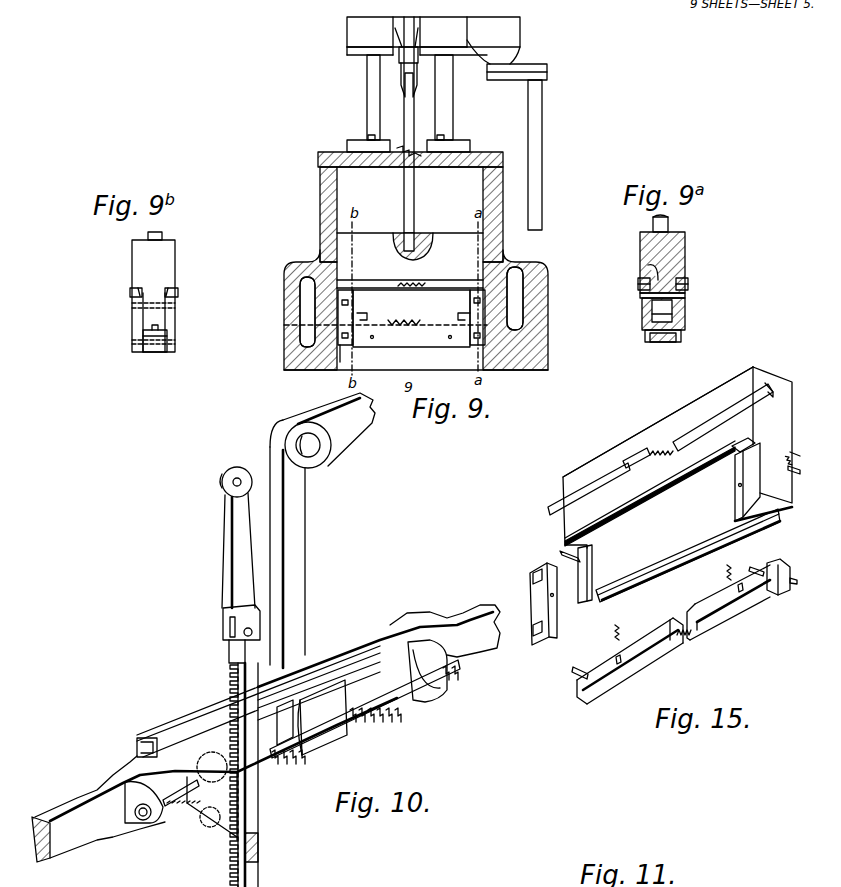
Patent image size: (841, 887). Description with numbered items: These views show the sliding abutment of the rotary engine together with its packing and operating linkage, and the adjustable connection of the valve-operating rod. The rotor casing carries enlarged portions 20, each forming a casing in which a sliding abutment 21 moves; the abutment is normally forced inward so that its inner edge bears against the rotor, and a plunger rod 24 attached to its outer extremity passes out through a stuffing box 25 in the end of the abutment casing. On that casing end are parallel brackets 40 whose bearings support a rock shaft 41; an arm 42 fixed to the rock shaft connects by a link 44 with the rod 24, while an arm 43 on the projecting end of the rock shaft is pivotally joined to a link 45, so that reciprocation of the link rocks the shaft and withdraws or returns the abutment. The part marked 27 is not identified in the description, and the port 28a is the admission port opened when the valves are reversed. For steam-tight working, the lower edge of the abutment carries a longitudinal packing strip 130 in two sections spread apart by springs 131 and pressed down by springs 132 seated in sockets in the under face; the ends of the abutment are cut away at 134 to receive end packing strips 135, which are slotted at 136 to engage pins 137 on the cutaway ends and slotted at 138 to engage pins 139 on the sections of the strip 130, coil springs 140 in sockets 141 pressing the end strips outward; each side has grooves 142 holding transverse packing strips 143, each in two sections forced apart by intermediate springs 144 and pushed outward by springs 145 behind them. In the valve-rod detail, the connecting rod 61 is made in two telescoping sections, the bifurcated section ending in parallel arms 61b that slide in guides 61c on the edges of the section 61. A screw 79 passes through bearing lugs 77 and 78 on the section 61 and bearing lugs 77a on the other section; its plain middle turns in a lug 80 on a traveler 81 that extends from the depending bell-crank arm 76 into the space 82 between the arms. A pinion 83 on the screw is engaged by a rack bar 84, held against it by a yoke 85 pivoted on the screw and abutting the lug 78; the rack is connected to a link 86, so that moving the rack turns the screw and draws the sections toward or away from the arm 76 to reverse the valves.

In FIG. 9, the rock shaft 41 is at (347, 36).
In FIG. 9, the arm 42 is at (400, 56).
In FIG. 9, the arm 43 is at (505, 62).
In FIG. 9, the link 44 is at (402, 78).
In FIG. 9, the link 45 is at (542, 165).
In FIG. 9, the parallel brackets 40 is at (453, 112).
In FIG. 9, the stuffing box 25 is at (430, 147).
In FIG. 9, the plunger rod 24 is at (414, 215).
In FIG. 9, the enlarged portion 20 is at (548, 298).
In FIG. 9, the sliding abutment 21 is at (453, 260).
In FIG. 9B, the bar 27 is at (172, 265).
In FIG. 9A, the bar 27 is at (686, 262).
In FIG. 15, the bar 27 is at (613, 448).
In FIG. 9, the port 28a is at (296, 305).
In FIG. 9B, the longitudinal packing strip 130 is at (152, 352).
In FIG. 9A, the longitudinal packing strip 130 is at (662, 343).
In FIG. 15, the longitudinal packing strip 130 is at (665, 660).
In FIG. 15, the springs 131 is at (762, 470).
In FIG. 9, the springs 132 is at (411, 318).
In FIG. 15, the springs 132 is at (752, 558).
In FIG. 15, the cutaway ends 134 is at (578, 585).
In FIG. 9, the end packing strips 135 is at (300, 330).
In FIG. 9B, the end packing strips 135 is at (136, 318).
In FIG. 9A, the end packing strips 135 is at (688, 314).
In FIG. 15, the end packing strips 135 is at (532, 610).
In FIG. 9, the slot 136 is at (346, 300).
In FIG. 15, the slot 136 is at (535, 575).
In FIG. 15, the pins 137 is at (738, 446).
In FIG. 9, the slot 138 is at (340, 362).
In FIG. 15, the slot 138 is at (537, 644).
In FIG. 15, the pins 139 is at (578, 678).
In FIG. 9, the coil springs 140 is at (366, 316).
In FIG. 15, the sockets 141 is at (735, 490).
In FIG. 9A, the grooves 142 is at (655, 280).
In FIG. 15, the grooves 142 is at (660, 495).
In FIG. 9B, the transversely extending packing strips 143 is at (176, 292).
In FIG. 9A, the transversely extending packing strips 143 is at (690, 284).
In FIG. 15, the transversely extending packing strips 143 is at (585, 478).
In FIG. 9, the intermediate springs 144 is at (415, 274).
In FIG. 15, the intermediate springs 144 is at (660, 446).
In FIG. 9B, the springs 145 is at (168, 288).
In FIG. 15, the springs 145 is at (752, 468).
In FIG. 10, the connecting rod section 61 is at (55, 810).
In FIG. 10, the parallel arms 61b is at (317, 660).
In FIG. 10, the guides 61c is at (200, 712).
In FIG. 10, the arm 76 is at (292, 495).
In FIG. 10, the bearing lug 77 is at (160, 822).
In FIG. 10, the bearing lugs 77a is at (437, 697).
In FIG. 10, the bearing lug 78 is at (290, 770).
In FIG. 10, the screw 79 is at (385, 700).
In FIG. 10, the lug 80 is at (335, 710).
In FIG. 10, the traveler 81 is at (286, 722).
In FIG. 10, the space 82 is at (345, 665).
In FIG. 10, the pinion 83 is at (200, 752).
In FIG. 10, the rack bar 84 is at (262, 866).
In FIG. 10, the yoke 85 is at (224, 775).
In FIG. 10, the link 86 is at (232, 521).